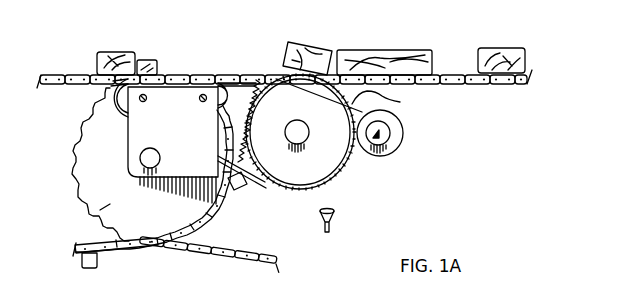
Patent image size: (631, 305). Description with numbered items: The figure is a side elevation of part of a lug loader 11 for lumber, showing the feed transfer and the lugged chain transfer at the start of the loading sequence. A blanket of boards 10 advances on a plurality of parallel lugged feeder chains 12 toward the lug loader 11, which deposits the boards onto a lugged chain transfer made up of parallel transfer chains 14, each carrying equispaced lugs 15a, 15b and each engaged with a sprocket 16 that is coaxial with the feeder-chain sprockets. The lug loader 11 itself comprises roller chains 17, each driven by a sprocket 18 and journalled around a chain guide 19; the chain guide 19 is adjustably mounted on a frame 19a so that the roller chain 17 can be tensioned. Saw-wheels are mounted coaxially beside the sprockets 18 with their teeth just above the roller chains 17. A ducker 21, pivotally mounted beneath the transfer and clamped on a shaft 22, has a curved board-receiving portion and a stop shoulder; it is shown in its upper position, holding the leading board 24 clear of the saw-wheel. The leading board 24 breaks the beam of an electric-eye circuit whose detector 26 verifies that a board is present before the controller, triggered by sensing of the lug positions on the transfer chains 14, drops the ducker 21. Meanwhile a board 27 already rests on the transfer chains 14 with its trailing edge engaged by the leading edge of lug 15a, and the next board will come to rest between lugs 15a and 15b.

The blanket of boards 10 is at (458, 47).
The lug loader 11 is at (258, 74).
The lugged feeder chains 12 is at (485, 84).
The transfer chains 14 is at (53, 76).
The lug 15a is at (160, 60).
The lug 15b is at (240, 197).
The sprocket 16 is at (104, 226).
The roller chains 17 is at (203, 78).
The sprocket 18 is at (268, 144).
The chain guide 19 is at (243, 83).
The frame 19a is at (128, 153).
The ducker 21 is at (392, 100).
The shaft 22 is at (388, 151).
The leading board 24 is at (330, 46).
The electric-eye detector 26 is at (330, 223).
The board 27 is at (113, 51).